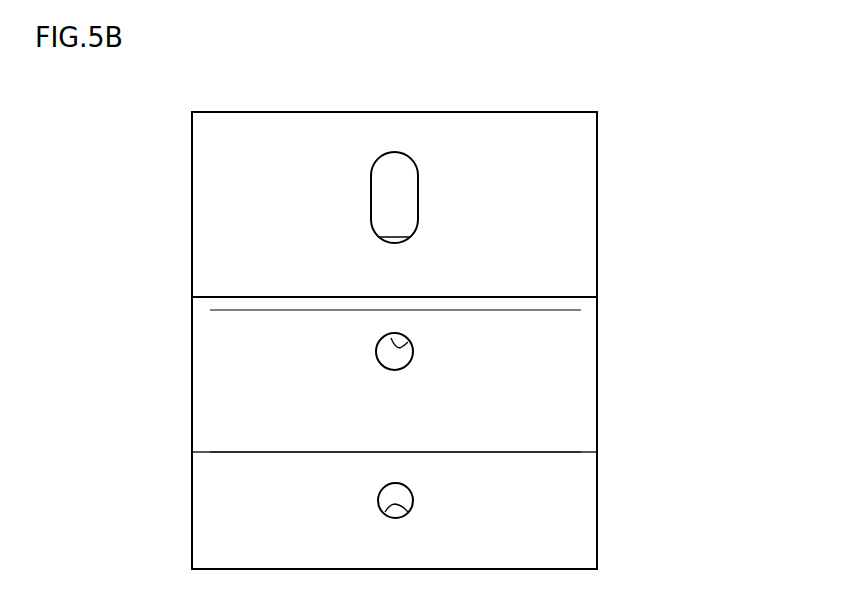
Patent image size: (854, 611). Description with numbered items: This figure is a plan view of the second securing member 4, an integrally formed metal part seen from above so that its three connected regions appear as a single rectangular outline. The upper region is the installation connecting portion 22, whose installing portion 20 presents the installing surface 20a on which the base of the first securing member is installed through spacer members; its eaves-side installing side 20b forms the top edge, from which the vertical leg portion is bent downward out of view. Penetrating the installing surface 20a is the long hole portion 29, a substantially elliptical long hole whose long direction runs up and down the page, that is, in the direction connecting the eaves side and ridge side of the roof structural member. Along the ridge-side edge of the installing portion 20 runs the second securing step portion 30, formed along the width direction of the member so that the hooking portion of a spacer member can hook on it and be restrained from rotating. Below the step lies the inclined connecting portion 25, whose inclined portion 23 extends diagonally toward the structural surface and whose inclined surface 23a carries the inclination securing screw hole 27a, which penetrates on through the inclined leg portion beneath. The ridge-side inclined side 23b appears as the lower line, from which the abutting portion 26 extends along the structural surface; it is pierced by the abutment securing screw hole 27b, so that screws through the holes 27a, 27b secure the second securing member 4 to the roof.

The installation connecting portion 22 is at (151, 161).
The installing portion 20 is at (394, 204).
The installing surface 20a is at (597, 189).
The eaves-side installing side 20b is at (537, 112).
The second securing step portion 30 is at (592, 303).
The long hole portion 29 is at (375, 197).
The inclination securing screw hole 27a is at (409, 343).
The abutment securing screw hole 27b is at (378, 514).
The inclined portion 23 is at (394, 433).
The inclined surface 23a is at (575, 418).
The ridge-side inclined side 23b is at (510, 451).
The inclined connecting portion 25 is at (660, 374).
The second securing member 4 is at (718, 329).
The abutting portion 26 is at (590, 542).